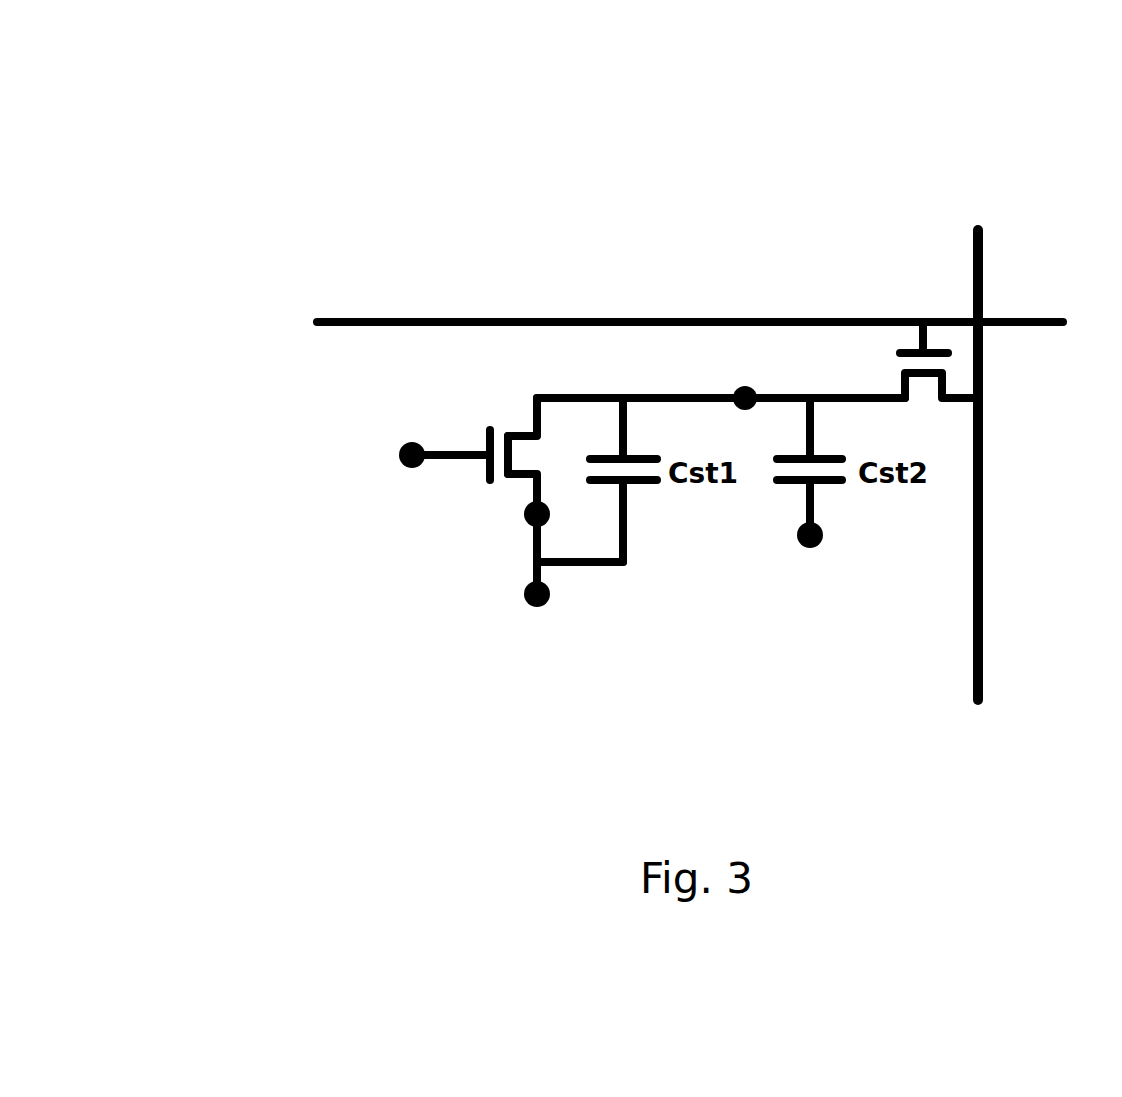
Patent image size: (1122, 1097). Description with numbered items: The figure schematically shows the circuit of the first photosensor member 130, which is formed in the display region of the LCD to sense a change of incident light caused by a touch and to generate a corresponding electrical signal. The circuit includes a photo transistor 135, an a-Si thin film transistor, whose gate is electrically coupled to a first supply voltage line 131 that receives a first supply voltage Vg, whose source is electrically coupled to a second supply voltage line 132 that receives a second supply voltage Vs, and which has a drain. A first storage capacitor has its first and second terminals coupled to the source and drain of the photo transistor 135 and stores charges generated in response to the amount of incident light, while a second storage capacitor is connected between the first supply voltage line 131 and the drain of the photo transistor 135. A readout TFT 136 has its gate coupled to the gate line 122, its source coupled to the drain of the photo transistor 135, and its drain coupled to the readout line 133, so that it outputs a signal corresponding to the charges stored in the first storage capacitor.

The first photosensor member 130 is at (710, 45).
The gate line 122 is at (548, 315).
The first supply voltage line 131 is at (410, 442).
The second supply voltage line 132 is at (525, 605).
The readout line 133 is at (979, 506).
The photo transistor 135 is at (500, 487).
The readout TFT 136 is at (902, 365).